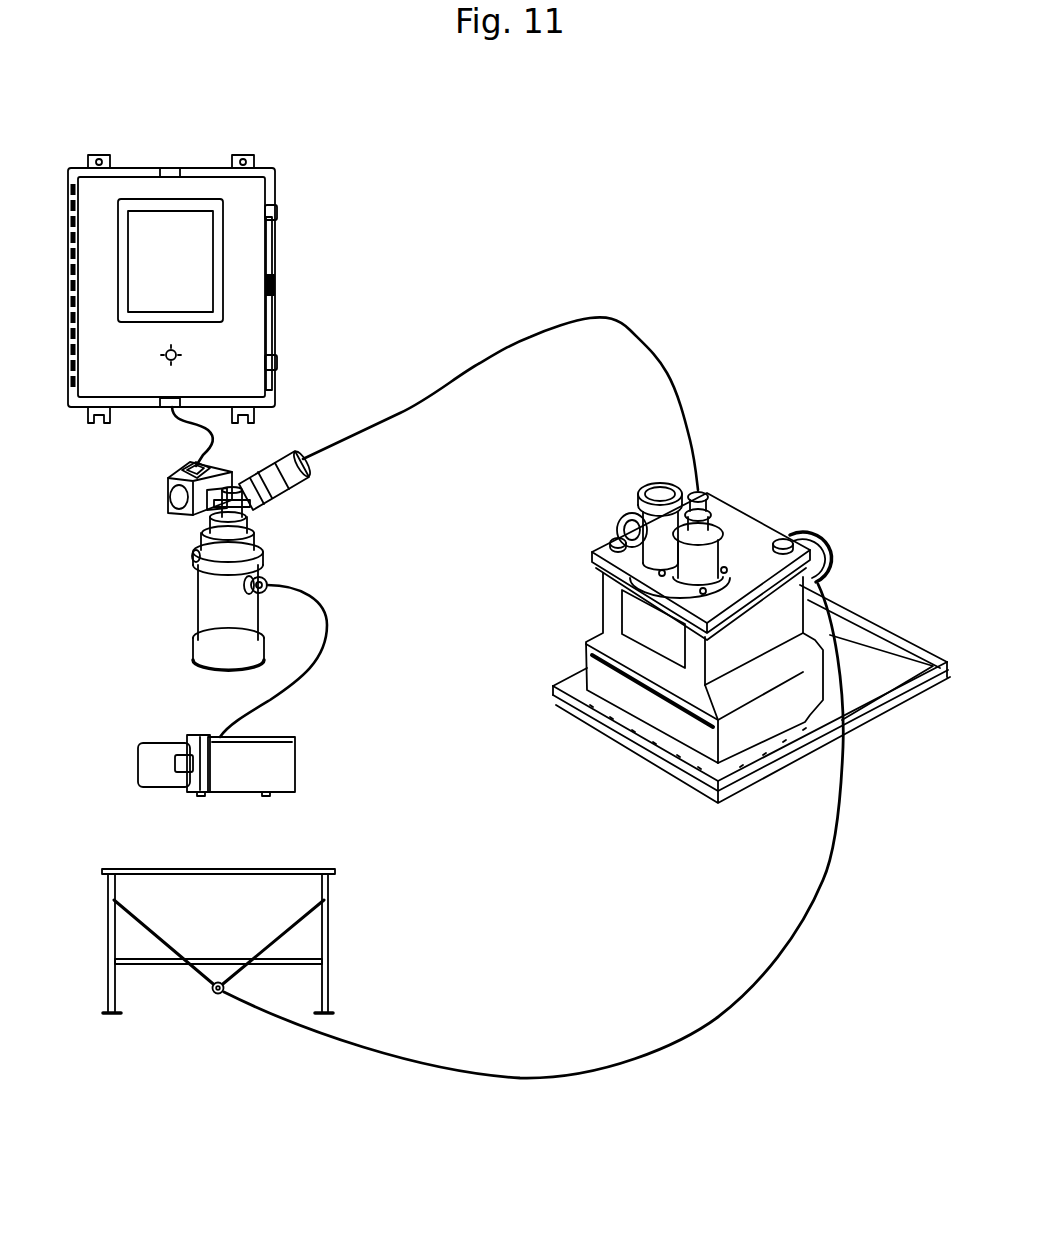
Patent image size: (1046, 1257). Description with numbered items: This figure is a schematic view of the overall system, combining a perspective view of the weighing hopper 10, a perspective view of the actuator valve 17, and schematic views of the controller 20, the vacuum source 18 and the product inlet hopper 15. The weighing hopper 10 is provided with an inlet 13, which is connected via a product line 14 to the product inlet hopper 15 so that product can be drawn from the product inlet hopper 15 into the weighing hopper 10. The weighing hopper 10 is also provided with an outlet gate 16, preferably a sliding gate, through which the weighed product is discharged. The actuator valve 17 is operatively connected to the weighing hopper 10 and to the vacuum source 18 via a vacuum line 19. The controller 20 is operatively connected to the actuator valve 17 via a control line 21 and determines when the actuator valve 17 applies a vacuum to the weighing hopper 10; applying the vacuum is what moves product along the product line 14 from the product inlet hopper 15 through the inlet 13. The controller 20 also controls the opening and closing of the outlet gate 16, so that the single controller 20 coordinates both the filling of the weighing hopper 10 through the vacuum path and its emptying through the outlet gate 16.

The weighing hopper 10 is at (603, 528).
The inlet 13 is at (803, 528).
The product line 14 is at (718, 1017).
The product inlet hopper 15 is at (327, 870).
The outlet gate 16 is at (620, 747).
The actuator valve 17 is at (197, 598).
The vacuum source 18 is at (298, 737).
The vacuum line 19 is at (327, 620).
The controller 20 is at (275, 220).
The control line 21 is at (170, 470).